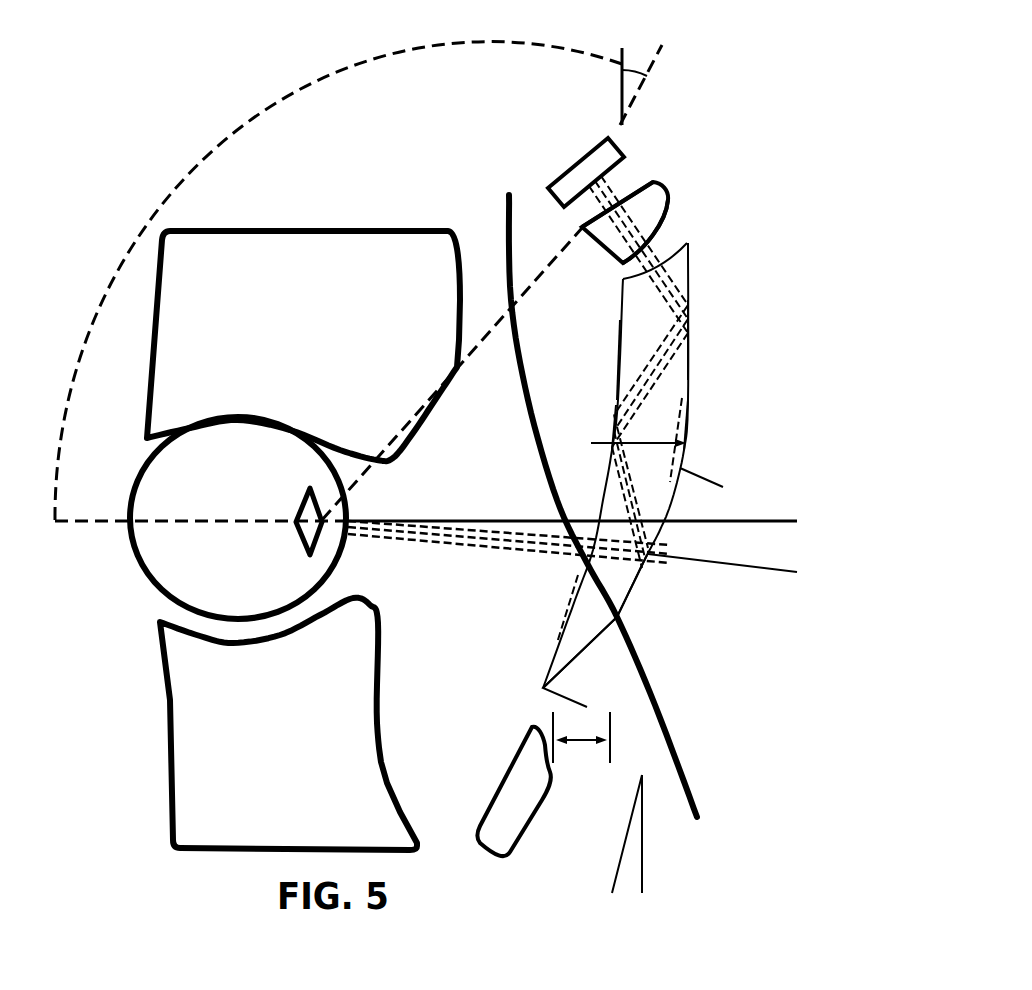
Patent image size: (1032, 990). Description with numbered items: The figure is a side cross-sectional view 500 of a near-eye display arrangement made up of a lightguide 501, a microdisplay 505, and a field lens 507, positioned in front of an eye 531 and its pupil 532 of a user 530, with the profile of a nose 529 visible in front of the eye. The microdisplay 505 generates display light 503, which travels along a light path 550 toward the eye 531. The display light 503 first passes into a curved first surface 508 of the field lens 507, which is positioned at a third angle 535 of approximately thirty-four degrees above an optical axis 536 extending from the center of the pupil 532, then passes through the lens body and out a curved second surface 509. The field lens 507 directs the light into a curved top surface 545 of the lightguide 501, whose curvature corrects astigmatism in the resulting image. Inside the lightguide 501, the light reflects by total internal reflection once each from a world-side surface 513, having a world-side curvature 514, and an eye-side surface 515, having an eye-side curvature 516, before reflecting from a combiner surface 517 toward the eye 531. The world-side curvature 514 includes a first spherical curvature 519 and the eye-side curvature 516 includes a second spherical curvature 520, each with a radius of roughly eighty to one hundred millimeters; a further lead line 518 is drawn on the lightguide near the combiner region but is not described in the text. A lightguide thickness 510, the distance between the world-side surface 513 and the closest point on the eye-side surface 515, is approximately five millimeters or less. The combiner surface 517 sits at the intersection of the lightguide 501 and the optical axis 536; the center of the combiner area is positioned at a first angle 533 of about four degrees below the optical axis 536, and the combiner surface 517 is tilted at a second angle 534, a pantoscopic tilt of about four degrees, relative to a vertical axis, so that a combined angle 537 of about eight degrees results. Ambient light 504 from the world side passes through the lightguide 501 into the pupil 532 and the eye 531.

The side cross-sectional view 500 is at (772, 228).
The lightguide 501 is at (637, 336).
The display light 503 is at (605, 192).
The ambient light 504 is at (745, 623).
The microdisplay 505 is at (620, 143).
The field lens 507 is at (665, 197).
The first surface 508 is at (595, 217).
The second surface 509 is at (672, 205).
The lightguide thickness 510 is at (578, 745).
The world-side surface 513 is at (687, 338).
The world-side curvature 514 is at (694, 403).
The eye-side surface 515 is at (618, 357).
The eye-side curvature 516 is at (611, 403).
The combiner surface 517 is at (590, 658).
The out-coupling surface 518 is at (635, 606).
The first spherical curvature 519 is at (639, 458).
The second spherical curvature 520 is at (564, 608).
The nose 529 is at (648, 680).
The user 530 is at (259, 751).
The eye 531 is at (231, 562).
The pupil 532 is at (305, 494).
The first angle 533 is at (778, 612).
The second angle 534 is at (683, 893).
The third angle 535 is at (383, 510).
The optical axis 536 is at (531, 520).
The combined angle 537 is at (622, 66).
The top surface 545 is at (683, 240).
The light path 550 is at (388, 543).